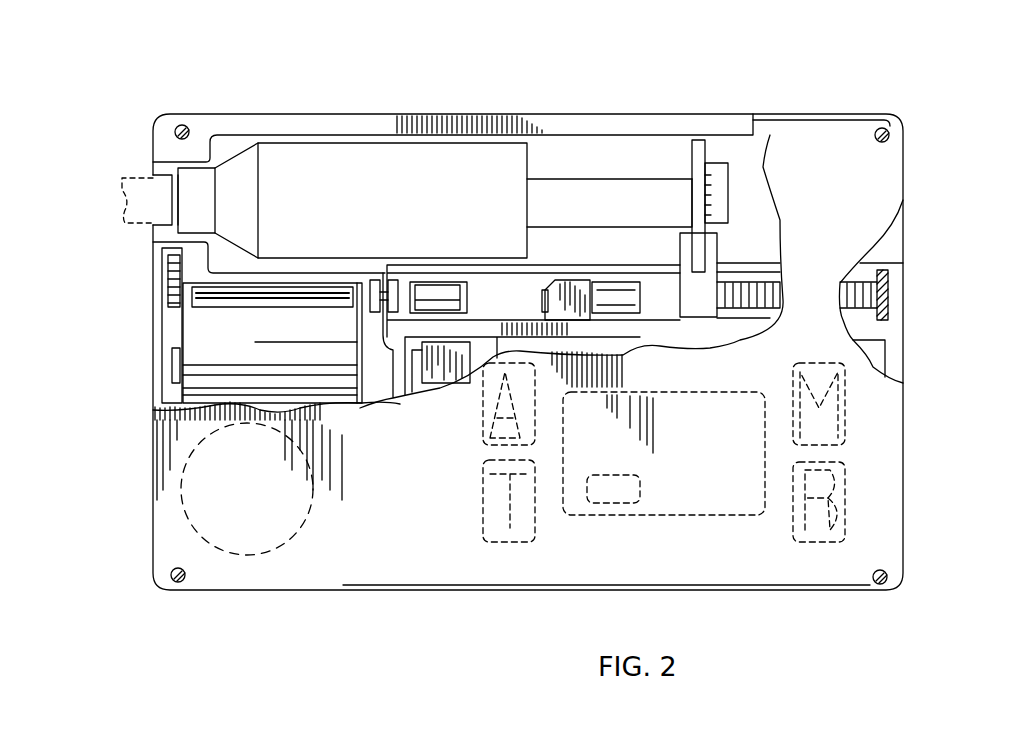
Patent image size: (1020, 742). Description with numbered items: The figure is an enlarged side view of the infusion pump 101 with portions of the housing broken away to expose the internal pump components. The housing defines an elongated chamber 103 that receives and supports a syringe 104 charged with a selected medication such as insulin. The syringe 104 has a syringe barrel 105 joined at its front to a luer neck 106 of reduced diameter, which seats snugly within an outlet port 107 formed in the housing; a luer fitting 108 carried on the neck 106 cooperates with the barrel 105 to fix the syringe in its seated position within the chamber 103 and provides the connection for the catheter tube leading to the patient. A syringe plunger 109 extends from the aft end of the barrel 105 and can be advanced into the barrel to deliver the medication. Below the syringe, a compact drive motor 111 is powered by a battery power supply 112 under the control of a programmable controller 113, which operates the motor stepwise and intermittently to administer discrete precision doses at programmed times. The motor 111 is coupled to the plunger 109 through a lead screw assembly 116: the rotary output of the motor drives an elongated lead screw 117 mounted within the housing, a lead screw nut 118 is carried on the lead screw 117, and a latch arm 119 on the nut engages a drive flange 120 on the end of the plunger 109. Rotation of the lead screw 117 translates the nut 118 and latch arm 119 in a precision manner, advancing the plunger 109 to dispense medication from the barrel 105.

The infusion pump 101 is at (840, 100).
The elongated chamber 103 is at (635, 163).
The syringe 104 is at (387, 143).
The syringe barrel 105 is at (290, 160).
The luer neck 106 is at (177, 163).
The outlet port 107 is at (153, 177).
The luer fitting 108 is at (127, 233).
The syringe plunger 109 is at (670, 178).
The drive motor 111 is at (223, 353).
The battery power supply 112 is at (227, 512).
The programmable controller 113 is at (603, 490).
The lead screw assembly 116 is at (648, 315).
The lead screw 117 is at (748, 290).
The lead screw nut 118 is at (692, 317).
The latch arm 119 is at (723, 183).
The drive flange 120 is at (705, 153).